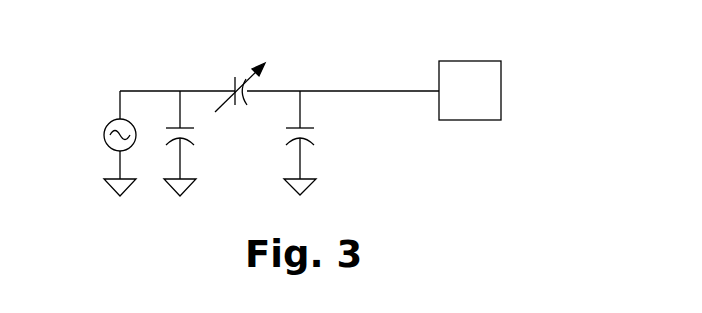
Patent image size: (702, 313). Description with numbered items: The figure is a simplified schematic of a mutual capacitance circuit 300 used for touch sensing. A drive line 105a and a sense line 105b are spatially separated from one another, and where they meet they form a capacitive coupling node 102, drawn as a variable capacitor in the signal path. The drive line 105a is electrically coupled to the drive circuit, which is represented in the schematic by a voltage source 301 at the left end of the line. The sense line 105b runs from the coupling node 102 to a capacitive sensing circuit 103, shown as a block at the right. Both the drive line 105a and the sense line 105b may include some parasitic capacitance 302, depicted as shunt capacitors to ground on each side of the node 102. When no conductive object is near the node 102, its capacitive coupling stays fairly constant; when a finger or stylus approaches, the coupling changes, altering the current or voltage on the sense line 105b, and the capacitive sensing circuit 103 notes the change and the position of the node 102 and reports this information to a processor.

The drive line 105a is at (150, 90).
The sense line 105b is at (317, 88).
The capacitive coupling node 102 is at (240, 75).
The capacitive sensing circuit 103 is at (455, 60).
The voltage source 301 is at (107, 145).
The parasitic capacitance 302 is at (198, 137).
The mutual capacitance circuit 300 is at (375, 193).